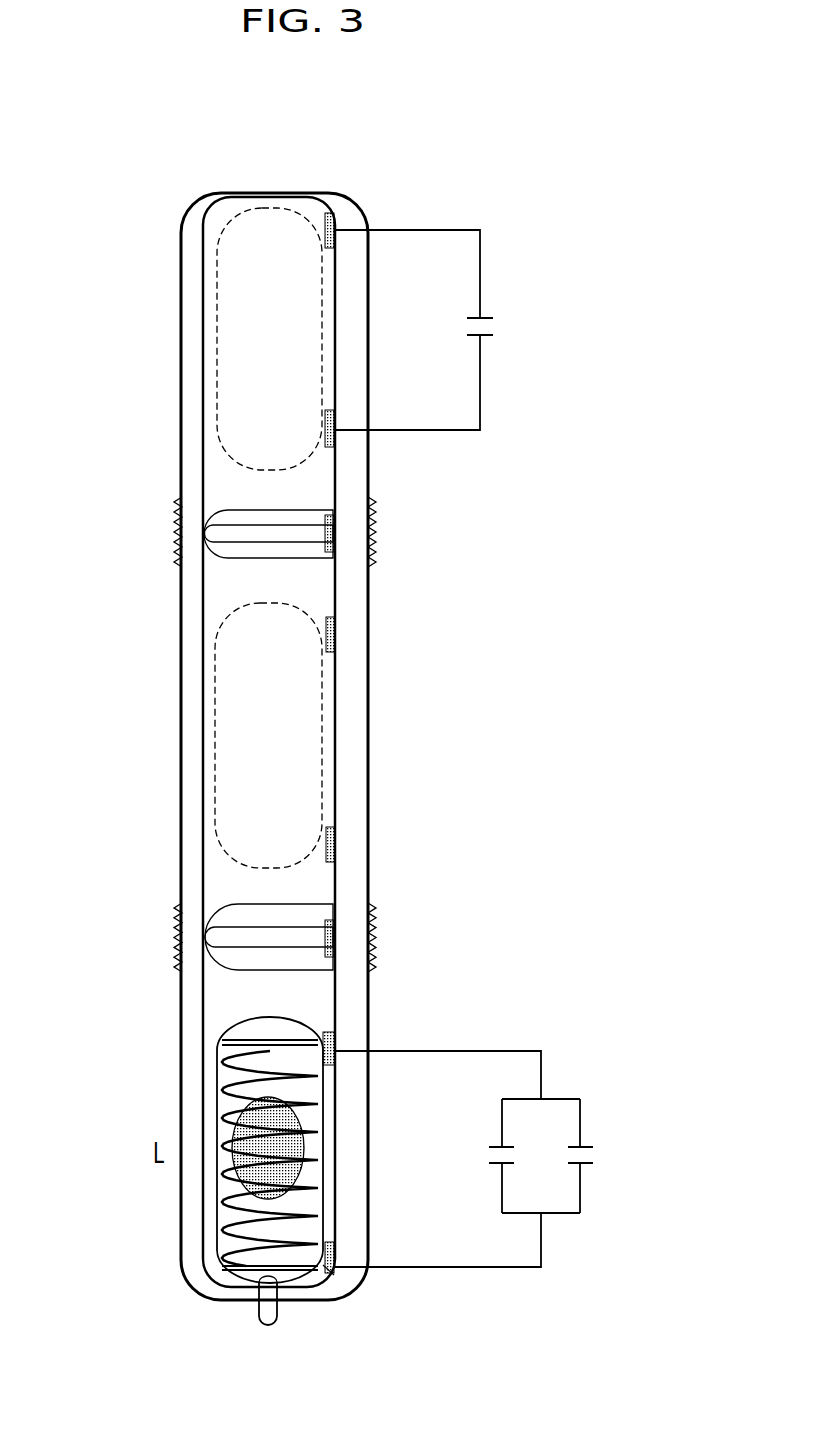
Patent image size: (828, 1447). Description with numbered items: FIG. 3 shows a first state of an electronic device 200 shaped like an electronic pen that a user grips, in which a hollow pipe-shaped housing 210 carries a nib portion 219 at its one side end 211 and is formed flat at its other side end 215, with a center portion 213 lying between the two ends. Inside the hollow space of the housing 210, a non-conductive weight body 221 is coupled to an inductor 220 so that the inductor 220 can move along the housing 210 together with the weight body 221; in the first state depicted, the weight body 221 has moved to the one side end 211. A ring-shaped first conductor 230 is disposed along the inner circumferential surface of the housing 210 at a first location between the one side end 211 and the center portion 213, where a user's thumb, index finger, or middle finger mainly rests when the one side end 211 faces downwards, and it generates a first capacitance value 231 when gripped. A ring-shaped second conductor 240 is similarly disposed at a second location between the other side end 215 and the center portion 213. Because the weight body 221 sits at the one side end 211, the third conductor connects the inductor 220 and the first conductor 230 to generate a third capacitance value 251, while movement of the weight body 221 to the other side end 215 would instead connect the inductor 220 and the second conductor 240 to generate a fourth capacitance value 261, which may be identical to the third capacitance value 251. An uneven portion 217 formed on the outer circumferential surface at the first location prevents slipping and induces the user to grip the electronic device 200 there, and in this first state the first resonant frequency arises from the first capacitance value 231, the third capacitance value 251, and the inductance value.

The electronic device 200 is at (122, 236).
The housing 210 is at (190, 430).
The one side end 211 is at (233, 1300).
The center portion 213 is at (192, 703).
The other side end 215 is at (270, 193).
The uneven portion 217 is at (175, 535).
The nib portion 219 is at (270, 1323).
The inductor 220 is at (203, 1140).
The weight body 221 is at (241, 1164).
The first conductor 230 is at (298, 915).
The first capacitance value 231 is at (456, 1135).
The second conductor 240 is at (298, 520).
The third capacitance value 251 is at (619, 1130).
The fourth capacitance value 261 is at (538, 297).